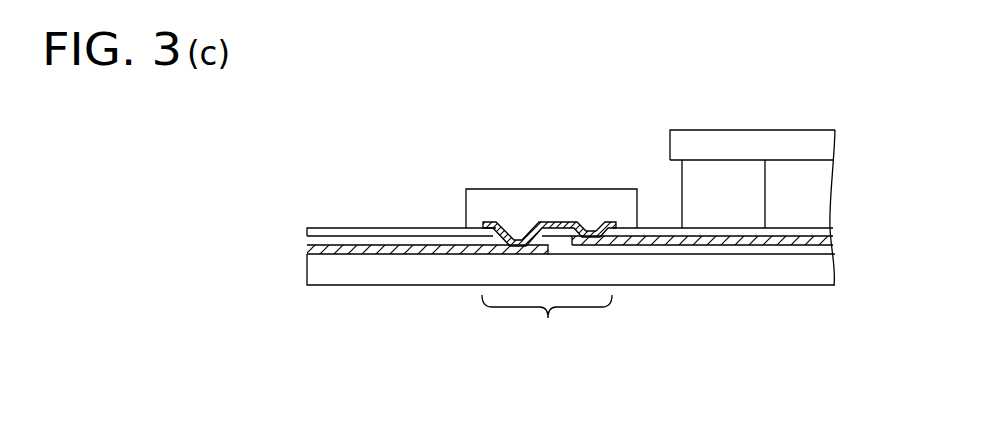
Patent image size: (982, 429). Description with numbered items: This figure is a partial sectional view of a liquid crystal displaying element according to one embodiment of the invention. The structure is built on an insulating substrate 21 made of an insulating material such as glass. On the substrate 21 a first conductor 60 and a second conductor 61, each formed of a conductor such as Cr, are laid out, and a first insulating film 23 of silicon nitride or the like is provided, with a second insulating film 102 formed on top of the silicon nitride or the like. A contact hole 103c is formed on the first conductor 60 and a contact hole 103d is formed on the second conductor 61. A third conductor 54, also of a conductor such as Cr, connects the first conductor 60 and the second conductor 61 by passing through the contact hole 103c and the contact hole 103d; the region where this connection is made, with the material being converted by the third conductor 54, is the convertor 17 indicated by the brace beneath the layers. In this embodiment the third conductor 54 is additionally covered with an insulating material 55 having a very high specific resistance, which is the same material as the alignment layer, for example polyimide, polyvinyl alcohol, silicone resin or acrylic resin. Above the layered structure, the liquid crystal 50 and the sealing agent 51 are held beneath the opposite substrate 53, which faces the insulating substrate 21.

The insulating substrate 21 is at (353, 268).
The first conductor 60 is at (444, 248).
The first insulating film 23 is at (640, 250).
The second conductor 61 is at (711, 243).
The second insulating film 102 is at (383, 232).
The third conductor 54 is at (573, 222).
The insulating material 55 is at (485, 203).
The contact hole 103c is at (517, 209).
The contact hole 103d is at (592, 207).
The opposite substrate 53 is at (691, 143).
The sealing agent 51 is at (737, 178).
The liquid crystal 50 is at (810, 182).
The convertor 17 is at (548, 318).